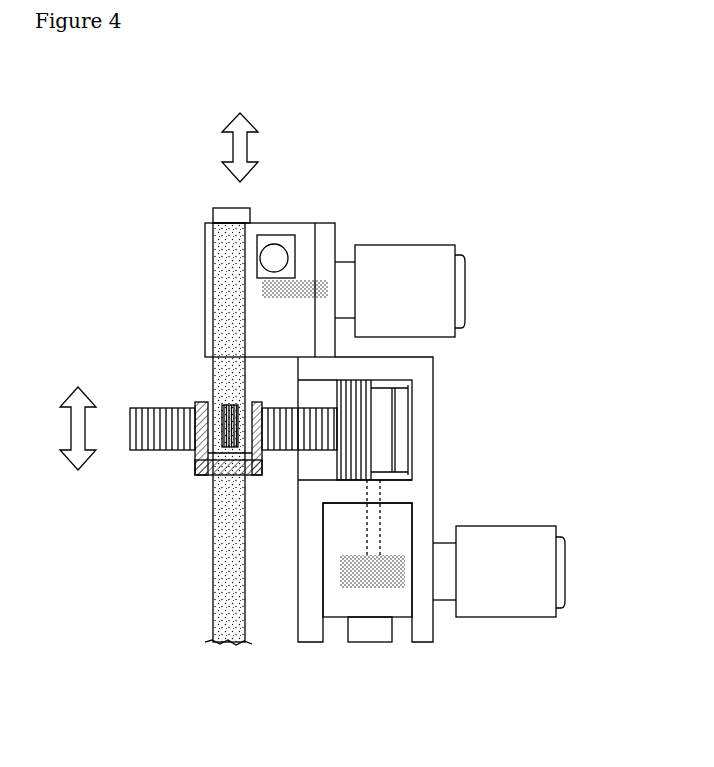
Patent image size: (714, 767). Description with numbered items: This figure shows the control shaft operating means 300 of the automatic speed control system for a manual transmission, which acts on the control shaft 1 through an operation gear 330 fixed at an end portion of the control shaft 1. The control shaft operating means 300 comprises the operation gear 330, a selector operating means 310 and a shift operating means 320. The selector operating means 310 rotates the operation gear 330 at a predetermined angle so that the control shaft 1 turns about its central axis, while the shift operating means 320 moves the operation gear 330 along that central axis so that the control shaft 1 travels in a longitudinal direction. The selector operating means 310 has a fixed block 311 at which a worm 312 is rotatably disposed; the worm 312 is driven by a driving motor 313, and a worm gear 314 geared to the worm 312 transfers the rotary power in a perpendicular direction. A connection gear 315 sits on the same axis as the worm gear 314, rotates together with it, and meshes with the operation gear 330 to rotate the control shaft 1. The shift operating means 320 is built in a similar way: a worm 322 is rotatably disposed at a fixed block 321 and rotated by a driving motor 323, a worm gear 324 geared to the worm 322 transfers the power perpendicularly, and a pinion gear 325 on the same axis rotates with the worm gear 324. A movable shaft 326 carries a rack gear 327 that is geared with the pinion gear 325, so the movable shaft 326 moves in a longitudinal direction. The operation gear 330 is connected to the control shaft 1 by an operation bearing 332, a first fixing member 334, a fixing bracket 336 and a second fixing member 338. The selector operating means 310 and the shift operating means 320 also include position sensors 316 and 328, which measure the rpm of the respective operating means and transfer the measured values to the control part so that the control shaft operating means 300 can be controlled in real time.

The control shaft 1 is at (213, 588).
The control shaft operating means 300 is at (530, 332).
The selector operating means 310 is at (530, 480).
The fixed block 311 is at (427, 518).
The worm 312 is at (383, 575).
The driving motor 313 is at (520, 608).
The worm gear 314 is at (343, 575).
The connection gear 315 is at (375, 412).
The position sensor 316 is at (352, 645).
The shift operating means 320 is at (487, 242).
The fixed block 321 is at (205, 325).
The worm 322 is at (310, 283).
The driving motor 323 is at (400, 253).
The worm gear 324 is at (298, 287).
The pinion gear 325 is at (257, 242).
The movable shaft 326 is at (245, 280).
The rack gear 327 is at (253, 217).
The position sensor 328 is at (293, 260).
The operation gear 330 is at (163, 452).
The operation bearing 332 is at (193, 420).
The first fixing member 334 is at (210, 473).
The fixing bracket 336 is at (197, 478).
The second fixing member 338 is at (222, 408).